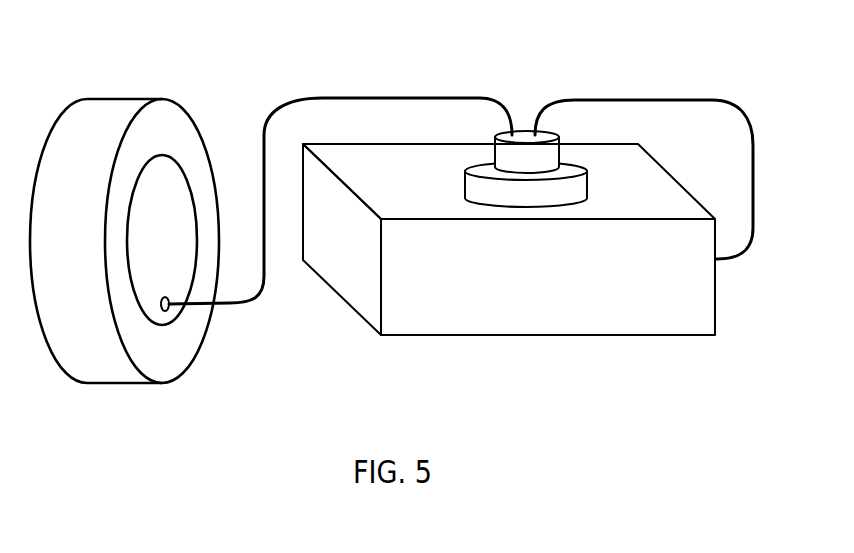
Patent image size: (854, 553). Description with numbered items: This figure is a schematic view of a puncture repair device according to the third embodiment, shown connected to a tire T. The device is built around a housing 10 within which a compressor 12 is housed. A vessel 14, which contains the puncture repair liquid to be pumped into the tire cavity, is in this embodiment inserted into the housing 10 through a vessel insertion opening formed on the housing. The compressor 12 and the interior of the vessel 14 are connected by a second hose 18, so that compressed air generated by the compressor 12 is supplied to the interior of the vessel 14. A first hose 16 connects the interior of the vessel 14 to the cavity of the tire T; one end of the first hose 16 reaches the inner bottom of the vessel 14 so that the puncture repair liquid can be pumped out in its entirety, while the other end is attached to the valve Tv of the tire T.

The tire T is at (117, 111).
The valve Tv is at (167, 312).
The first hose 16 is at (340, 97).
The second hose 18 is at (627, 98).
The housing 10 is at (509, 278).
The compressor 12 is at (555, 303).
The vessel 14 is at (573, 191).